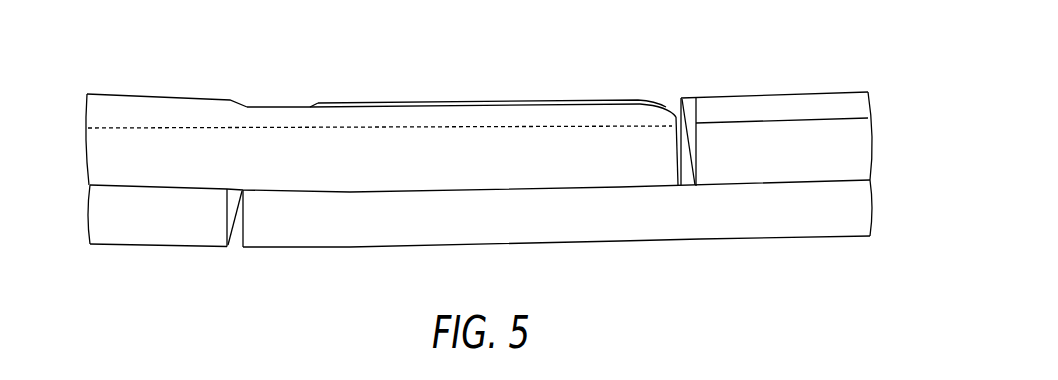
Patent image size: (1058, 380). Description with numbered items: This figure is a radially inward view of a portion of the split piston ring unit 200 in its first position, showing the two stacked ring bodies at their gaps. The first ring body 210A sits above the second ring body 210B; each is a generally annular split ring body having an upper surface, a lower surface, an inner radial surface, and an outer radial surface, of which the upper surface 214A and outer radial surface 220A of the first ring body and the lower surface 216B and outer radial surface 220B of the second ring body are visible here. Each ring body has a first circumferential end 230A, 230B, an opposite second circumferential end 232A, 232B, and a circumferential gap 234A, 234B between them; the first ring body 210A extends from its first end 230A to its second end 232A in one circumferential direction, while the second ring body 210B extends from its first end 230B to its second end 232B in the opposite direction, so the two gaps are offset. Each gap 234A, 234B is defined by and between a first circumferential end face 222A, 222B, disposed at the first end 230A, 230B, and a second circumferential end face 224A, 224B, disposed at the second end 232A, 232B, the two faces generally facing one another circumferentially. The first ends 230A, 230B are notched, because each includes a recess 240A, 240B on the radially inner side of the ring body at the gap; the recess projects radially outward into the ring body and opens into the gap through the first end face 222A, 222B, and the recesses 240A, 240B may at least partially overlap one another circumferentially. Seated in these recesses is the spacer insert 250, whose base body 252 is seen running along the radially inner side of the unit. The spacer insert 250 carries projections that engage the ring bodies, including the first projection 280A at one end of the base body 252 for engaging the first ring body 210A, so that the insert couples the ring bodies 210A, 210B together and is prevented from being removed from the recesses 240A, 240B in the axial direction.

The split piston ring unit 200 is at (118, 48).
The first ring body 210A is at (84, 149).
The second ring body 210B is at (100, 226).
The first recess 240A is at (271, 103).
The second recess 240B is at (271, 103).
The base body 252 is at (414, 101).
The spacer insert 250 is at (513, 97).
The first projection 280A is at (651, 100).
The first circumferential end 230A is at (598, 118).
The first circumferential end 230B is at (828, 104).
The upper surface 214A is at (853, 100).
The outer radial surface 220A is at (853, 148).
The first circumferential end face 222A is at (680, 140).
The second circumferential end face 224A is at (696, 160).
The circumferential gap 234A is at (688, 116).
The first circumferential end face 222B is at (228, 205).
The second circumferential end face 224B is at (243, 200).
The circumferential gap 234B is at (237, 248).
The second circumferential end 232A is at (349, 248).
The second circumferential end 232B is at (132, 248).
The lower surface 216B is at (835, 240).
The outer radial surface 220B is at (852, 208).